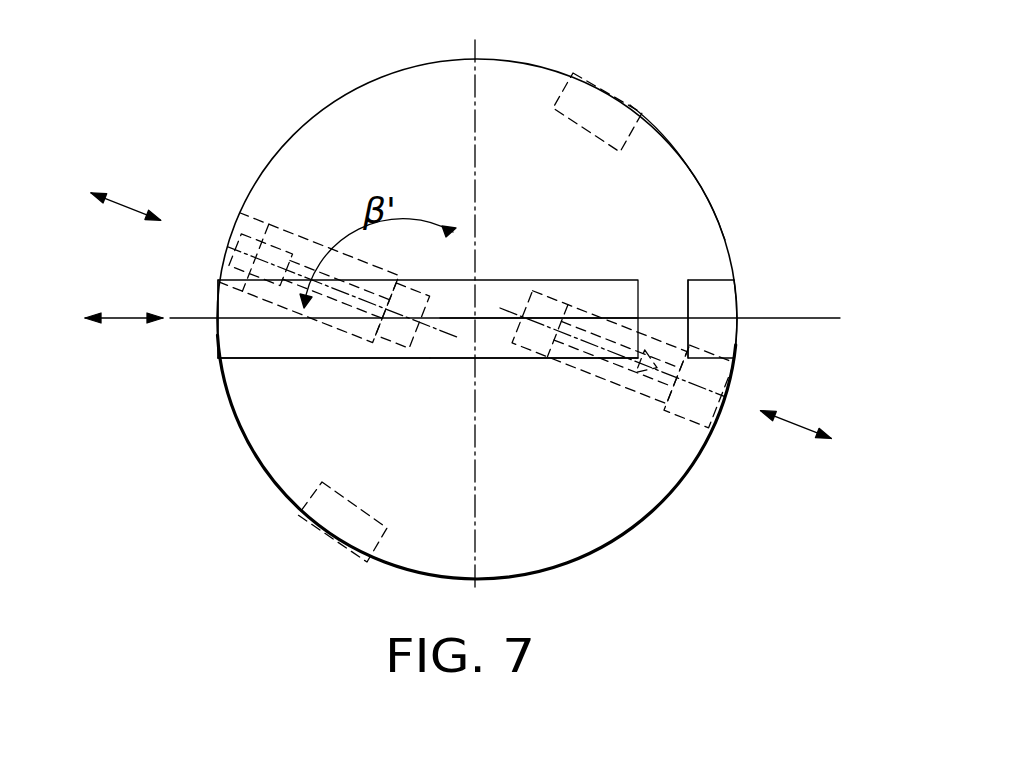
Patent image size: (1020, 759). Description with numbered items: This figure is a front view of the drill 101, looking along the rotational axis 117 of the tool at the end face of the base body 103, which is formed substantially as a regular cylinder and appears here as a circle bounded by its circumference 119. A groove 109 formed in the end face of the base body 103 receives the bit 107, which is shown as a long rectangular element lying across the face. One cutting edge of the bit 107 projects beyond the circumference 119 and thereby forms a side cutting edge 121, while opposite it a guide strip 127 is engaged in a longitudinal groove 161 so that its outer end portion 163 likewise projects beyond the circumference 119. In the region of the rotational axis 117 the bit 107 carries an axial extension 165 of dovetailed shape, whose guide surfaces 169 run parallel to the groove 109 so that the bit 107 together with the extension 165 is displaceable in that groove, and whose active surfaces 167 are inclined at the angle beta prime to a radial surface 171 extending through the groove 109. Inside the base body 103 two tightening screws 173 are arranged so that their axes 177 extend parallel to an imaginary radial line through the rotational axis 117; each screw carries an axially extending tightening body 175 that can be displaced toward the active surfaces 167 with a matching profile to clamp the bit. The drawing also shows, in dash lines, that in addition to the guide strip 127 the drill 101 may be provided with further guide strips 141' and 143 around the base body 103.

The drill 101 is at (365, 82).
The base body 103 is at (637, 170).
The circumference 119 is at (703, 195).
The rotational axis 117 is at (477, 318).
The radial surface 171 is at (790, 322).
The axes 177 is at (180, 223).
The side cutting edge 121 is at (217, 346).
The bit 107 is at (268, 337).
The groove 109 is at (317, 358).
The guide strip 127 is at (727, 290).
The longitudinal groove 161 is at (681, 288).
The end portion 163 is at (742, 308).
The tightening screws 173 is at (262, 289).
The tightening bodies 175 is at (462, 220).
The active surfaces 167 is at (398, 345).
The axial extension 165 is at (453, 343).
The guide surfaces 169 is at (490, 360).
The first guide strip 141' is at (635, 112).
The second guide strip 143 is at (333, 528).